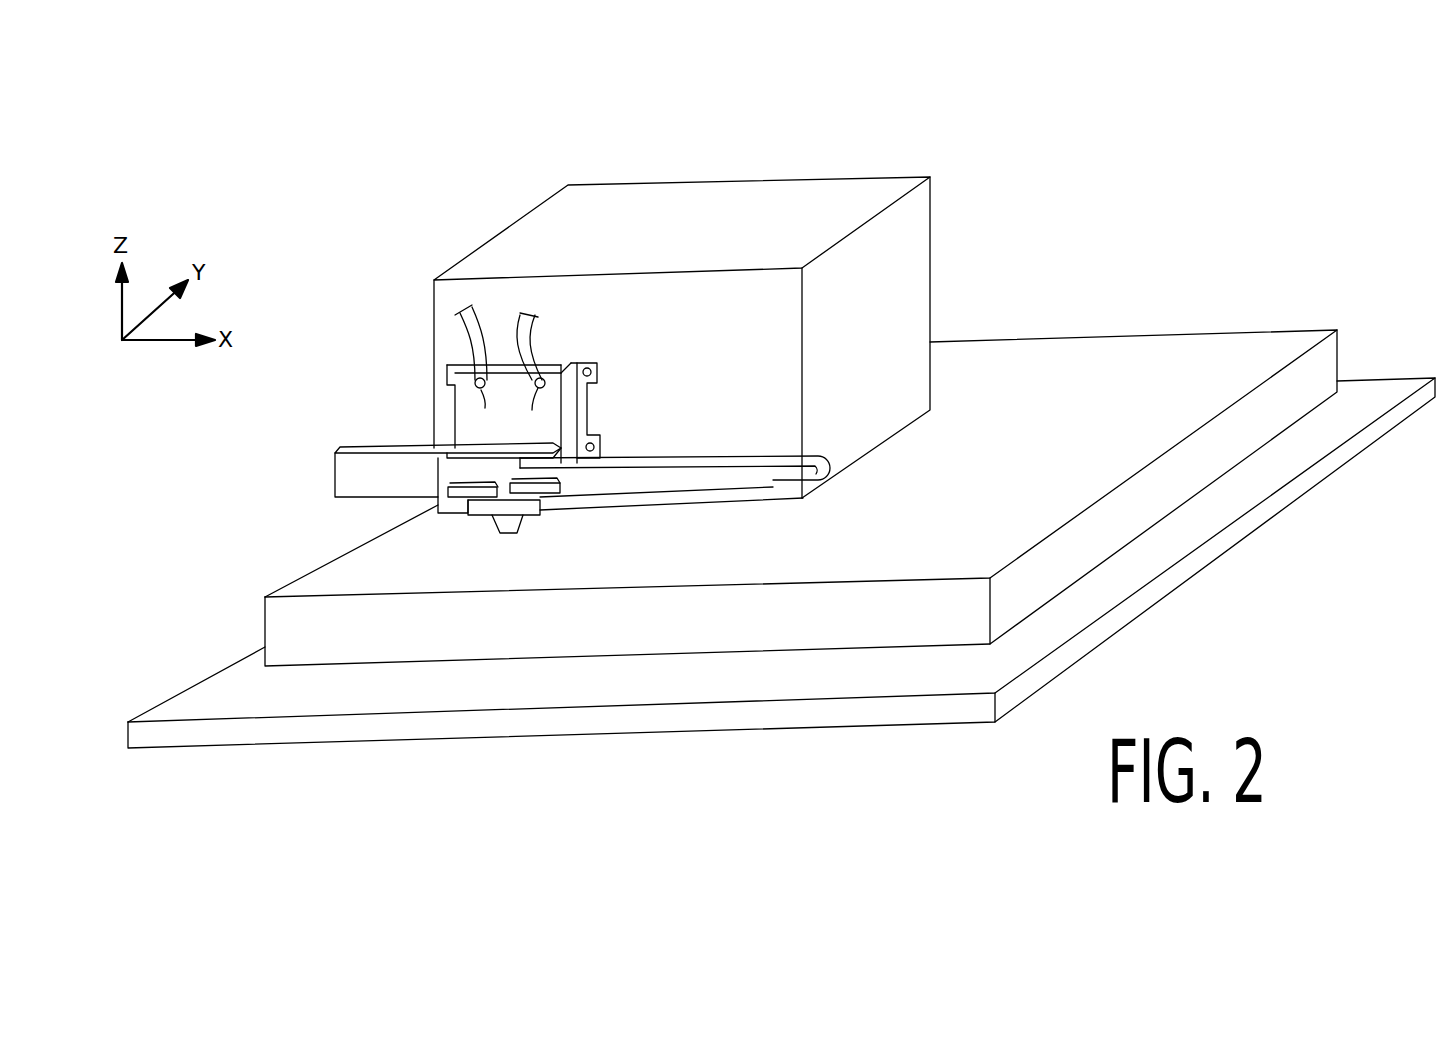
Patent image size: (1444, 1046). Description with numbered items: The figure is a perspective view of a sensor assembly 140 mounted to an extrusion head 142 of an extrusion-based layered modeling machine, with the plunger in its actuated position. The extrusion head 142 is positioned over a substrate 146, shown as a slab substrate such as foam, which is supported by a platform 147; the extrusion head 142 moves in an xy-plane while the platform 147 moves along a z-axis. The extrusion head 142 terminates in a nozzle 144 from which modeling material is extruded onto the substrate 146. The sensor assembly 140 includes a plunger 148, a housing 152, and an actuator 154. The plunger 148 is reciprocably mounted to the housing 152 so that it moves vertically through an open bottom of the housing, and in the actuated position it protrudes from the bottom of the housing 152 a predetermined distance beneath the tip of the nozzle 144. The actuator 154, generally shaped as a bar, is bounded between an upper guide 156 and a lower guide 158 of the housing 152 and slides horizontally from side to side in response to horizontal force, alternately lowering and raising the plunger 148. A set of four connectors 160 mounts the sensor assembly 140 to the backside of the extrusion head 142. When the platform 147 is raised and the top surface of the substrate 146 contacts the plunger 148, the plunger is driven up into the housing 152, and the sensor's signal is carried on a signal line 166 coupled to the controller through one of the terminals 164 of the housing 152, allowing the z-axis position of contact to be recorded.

The sensor assembly 140 is at (551, 390).
The extrusion head 142 is at (793, 200).
The nozzle 144 is at (612, 506).
The substrate 146 is at (1038, 346).
The platform 147 is at (258, 695).
The plunger 148 is at (455, 533).
The housing 152 is at (467, 430).
The actuator 154 is at (776, 473).
The upper guide 156 is at (453, 457).
The lower guide 158 is at (548, 502).
The connectors 160 is at (597, 375).
The terminals 164 is at (509, 413).
The signal line 166 is at (467, 320).